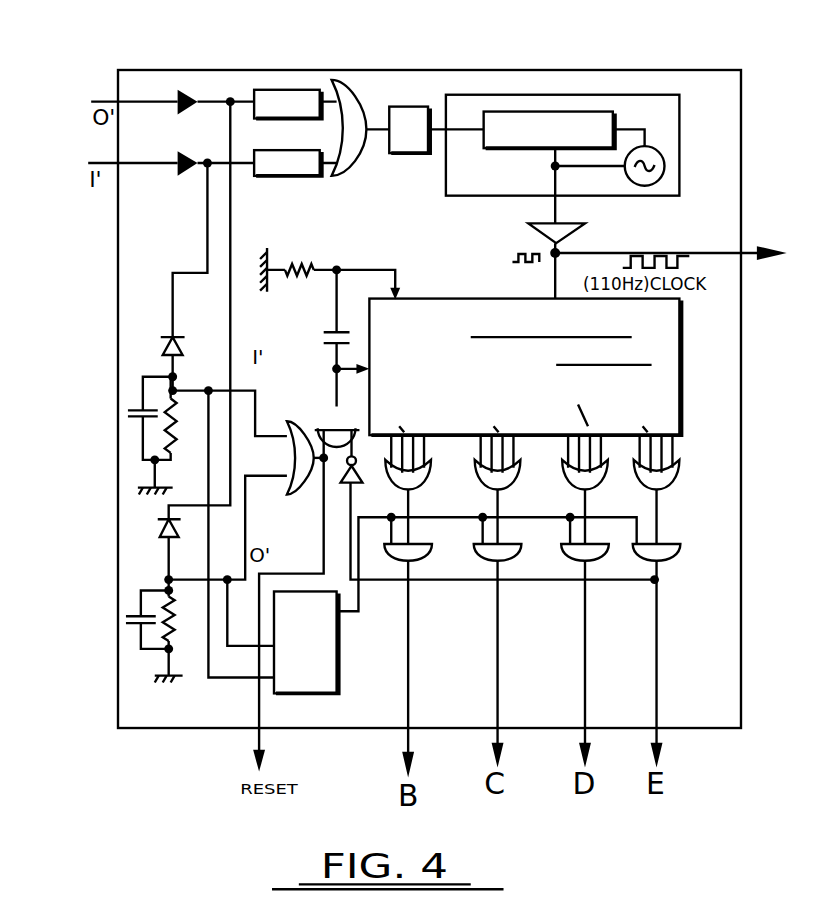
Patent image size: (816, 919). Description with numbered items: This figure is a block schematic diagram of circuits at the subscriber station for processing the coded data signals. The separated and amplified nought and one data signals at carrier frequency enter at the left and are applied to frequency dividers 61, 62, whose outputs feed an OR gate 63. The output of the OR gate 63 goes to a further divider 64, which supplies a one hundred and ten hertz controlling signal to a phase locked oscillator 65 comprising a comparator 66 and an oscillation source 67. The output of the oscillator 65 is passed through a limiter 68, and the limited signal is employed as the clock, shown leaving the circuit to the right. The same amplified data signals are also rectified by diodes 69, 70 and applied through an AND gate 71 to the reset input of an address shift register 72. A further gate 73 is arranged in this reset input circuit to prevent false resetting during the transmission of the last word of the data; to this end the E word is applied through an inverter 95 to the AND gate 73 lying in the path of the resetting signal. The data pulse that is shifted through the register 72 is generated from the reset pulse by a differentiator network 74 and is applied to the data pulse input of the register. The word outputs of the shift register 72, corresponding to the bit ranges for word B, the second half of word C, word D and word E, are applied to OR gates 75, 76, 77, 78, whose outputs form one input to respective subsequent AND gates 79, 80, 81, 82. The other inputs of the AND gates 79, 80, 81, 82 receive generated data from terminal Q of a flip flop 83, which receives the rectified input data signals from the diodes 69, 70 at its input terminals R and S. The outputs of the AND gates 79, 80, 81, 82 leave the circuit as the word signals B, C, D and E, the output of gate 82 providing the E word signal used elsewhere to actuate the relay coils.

The frequency divider 61 is at (303, 92).
The frequency divider 62 is at (271, 170).
The OR gate 63 is at (351, 100).
The further divider 64 is at (405, 105).
The phase locked oscillator 65 is at (582, 132).
The comparator 66 is at (520, 117).
The oscillation source 67 is at (659, 180).
The limiter 68 is at (530, 233).
The diode 69 is at (160, 344).
The diode 70 is at (152, 530).
The AND gate 71 is at (293, 474).
The address shift register 72 is at (650, 333).
The further gate 73 is at (330, 421).
The differentiator network 74 is at (348, 297).
The OR gate 75 is at (406, 483).
The OR gate 76 is at (494, 483).
The OR gate 77 is at (582, 483).
The OR gate 78 is at (655, 483).
The AND gate 79 is at (407, 555).
The AND gate 80 is at (497, 555).
The AND gate 81 is at (585, 555).
The AND gate 82 is at (657, 555).
The flip flop 83 is at (313, 659).
The inverter 95 is at (338, 483).